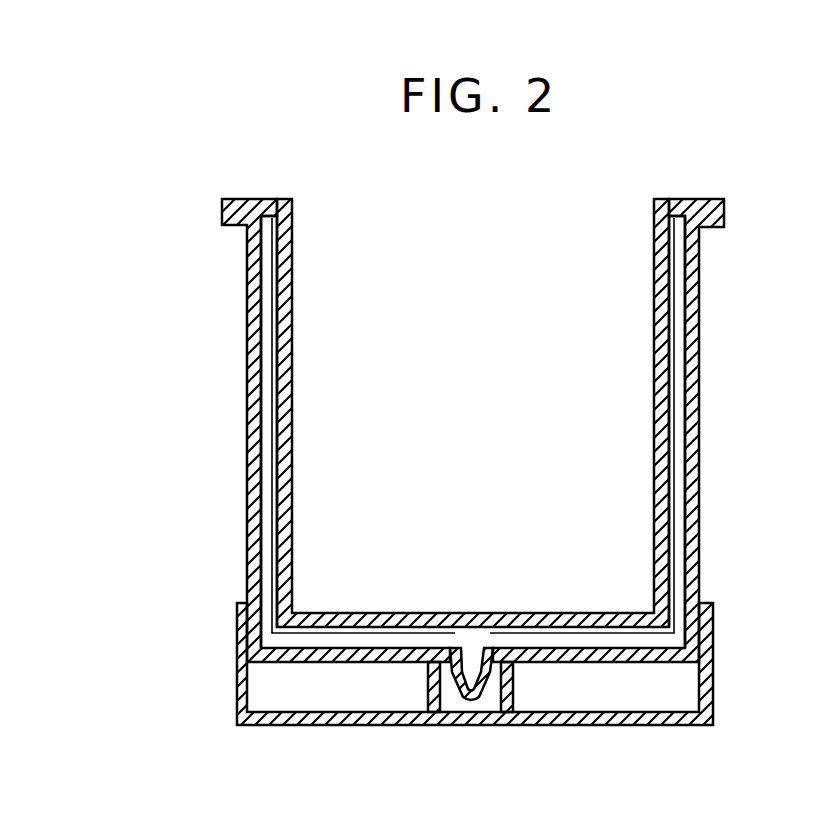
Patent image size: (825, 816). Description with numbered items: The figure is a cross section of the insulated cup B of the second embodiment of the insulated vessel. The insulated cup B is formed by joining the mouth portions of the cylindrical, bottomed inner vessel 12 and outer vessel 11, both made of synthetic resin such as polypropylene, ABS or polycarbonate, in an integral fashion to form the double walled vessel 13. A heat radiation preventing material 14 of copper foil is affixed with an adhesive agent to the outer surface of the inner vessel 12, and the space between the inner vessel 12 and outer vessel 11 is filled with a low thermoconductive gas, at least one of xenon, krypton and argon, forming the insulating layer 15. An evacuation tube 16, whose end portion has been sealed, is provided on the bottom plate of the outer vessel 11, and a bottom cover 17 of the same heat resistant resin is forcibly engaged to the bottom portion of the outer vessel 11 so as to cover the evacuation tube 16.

The outer vessel 11 is at (708, 338).
The inner vessel 12 is at (757, 367).
The double walled vessel 13 is at (517, 430).
The heat radiation preventing material 14 is at (668, 417).
The insulating layer 15 is at (677, 487).
The evacuation tube 16 is at (488, 698).
The bottom cover 17 is at (715, 650).
The insulated cup B is at (224, 262).